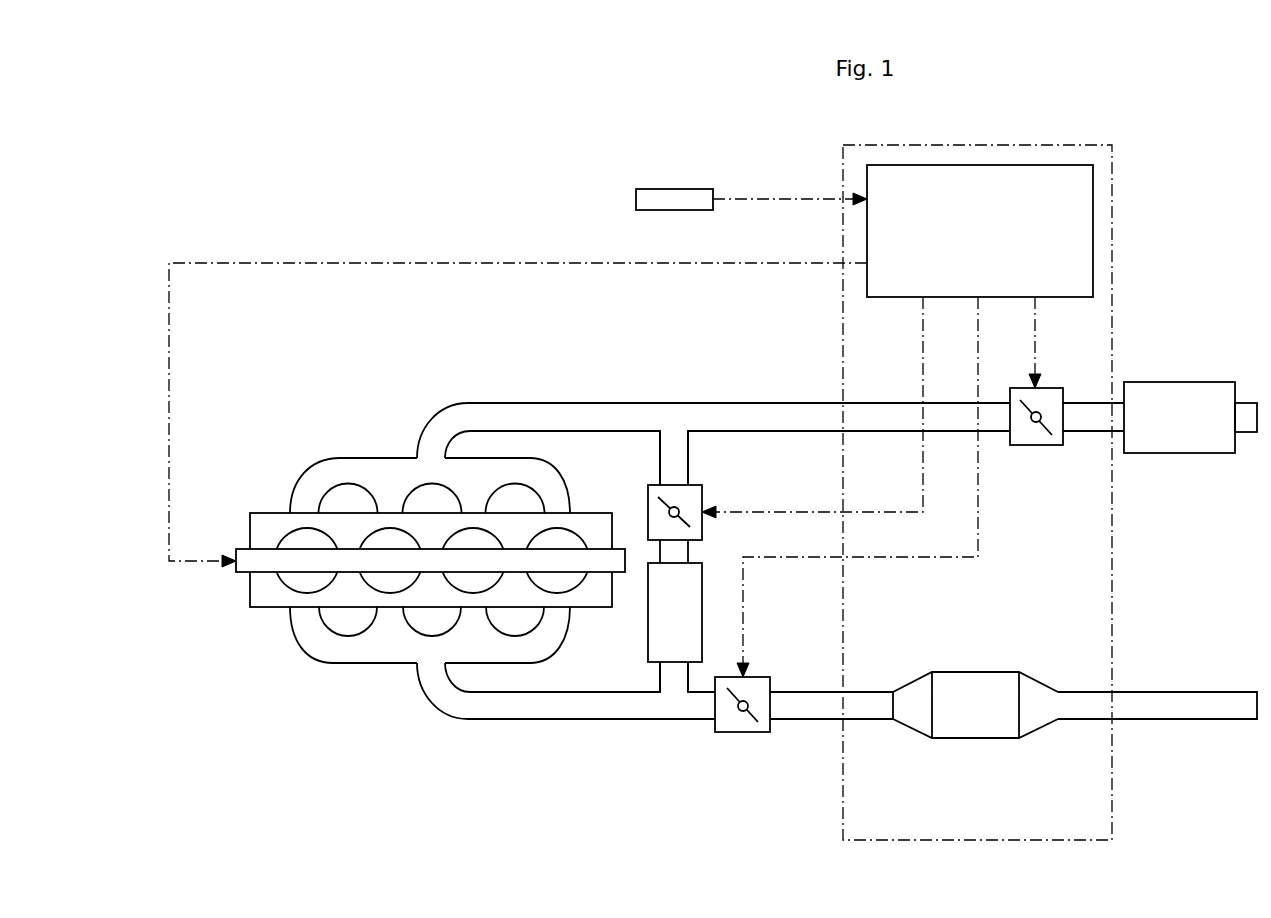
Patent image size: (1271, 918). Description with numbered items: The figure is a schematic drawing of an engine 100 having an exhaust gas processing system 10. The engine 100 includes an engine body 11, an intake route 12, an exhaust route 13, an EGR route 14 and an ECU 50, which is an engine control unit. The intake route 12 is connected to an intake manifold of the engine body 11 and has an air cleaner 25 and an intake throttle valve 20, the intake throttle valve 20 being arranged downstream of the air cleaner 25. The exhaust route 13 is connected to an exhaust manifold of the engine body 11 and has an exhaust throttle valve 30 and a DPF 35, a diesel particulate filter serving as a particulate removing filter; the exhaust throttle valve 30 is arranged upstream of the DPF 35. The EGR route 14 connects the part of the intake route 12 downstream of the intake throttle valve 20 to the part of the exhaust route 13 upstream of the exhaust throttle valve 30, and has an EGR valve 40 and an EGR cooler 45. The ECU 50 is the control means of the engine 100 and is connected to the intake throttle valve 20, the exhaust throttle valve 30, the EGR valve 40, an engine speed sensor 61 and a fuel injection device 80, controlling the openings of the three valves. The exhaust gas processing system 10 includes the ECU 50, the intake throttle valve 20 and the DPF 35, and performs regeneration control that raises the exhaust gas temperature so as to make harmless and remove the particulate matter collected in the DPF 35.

The engine 100 is at (246, 190).
The exhaust gas processing system 10 is at (1115, 840).
The engine body 11 is at (286, 453).
The intake route 12 is at (538, 385).
The exhaust route 13 is at (575, 762).
The EGR route 14 is at (720, 578).
The intake throttle valve 20 is at (1055, 395).
The air cleaner 25 is at (1170, 405).
The exhaust throttle valve 30 is at (742, 733).
The DPF 35 is at (960, 722).
The EGR valve 40 is at (695, 495).
The EGR cooler 45 is at (693, 618).
The ECU 50 is at (970, 244).
The engine speed sensor 61 is at (636, 198).
The fuel injection device 80 is at (265, 560).